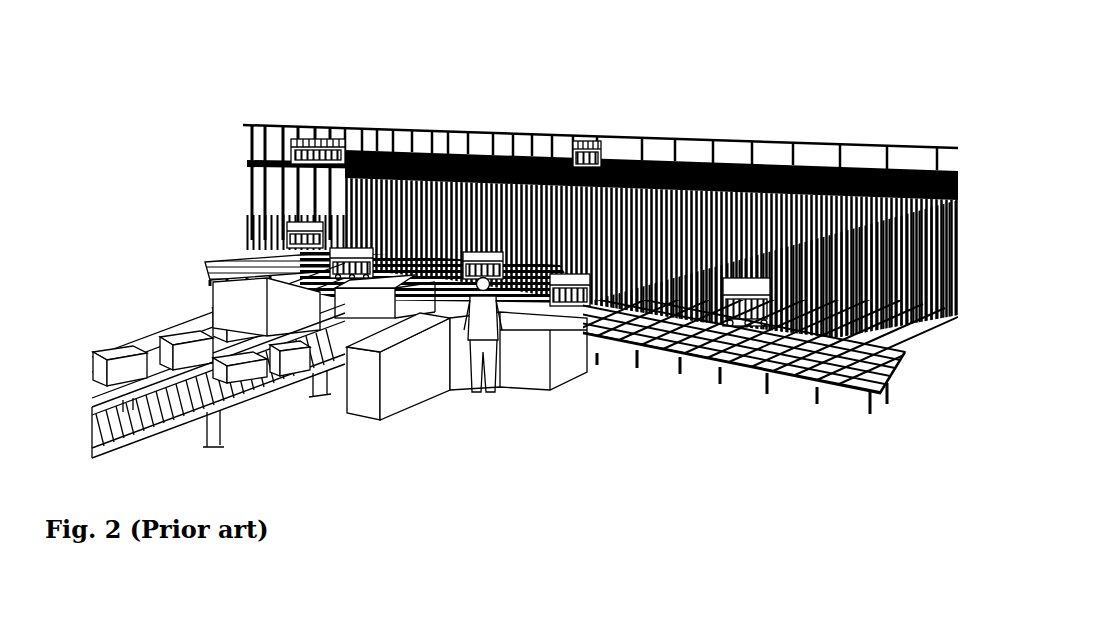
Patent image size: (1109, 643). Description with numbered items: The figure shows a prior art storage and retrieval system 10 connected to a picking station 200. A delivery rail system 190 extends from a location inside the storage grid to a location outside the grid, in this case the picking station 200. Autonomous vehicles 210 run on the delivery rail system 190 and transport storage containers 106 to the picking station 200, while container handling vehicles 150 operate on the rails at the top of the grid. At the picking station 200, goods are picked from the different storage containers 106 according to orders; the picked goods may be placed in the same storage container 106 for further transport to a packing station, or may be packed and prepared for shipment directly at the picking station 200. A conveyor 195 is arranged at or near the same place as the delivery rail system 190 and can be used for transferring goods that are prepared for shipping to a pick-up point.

The automated storage and retrieval system 10 is at (760, 128).
The container handling vehicle 150 is at (323, 143).
The autonomous vehicles 210 is at (313, 247).
The storage containers 106 is at (182, 335).
The conveyor 195 is at (154, 416).
The picking station 200 is at (427, 348).
The delivery rail system 190 is at (678, 354).